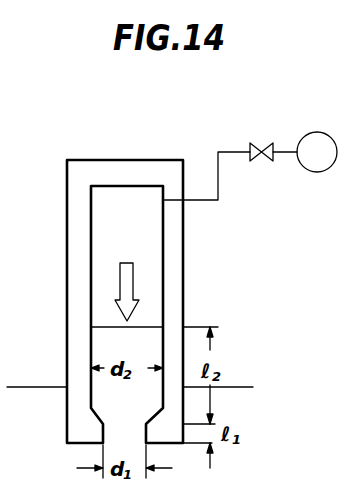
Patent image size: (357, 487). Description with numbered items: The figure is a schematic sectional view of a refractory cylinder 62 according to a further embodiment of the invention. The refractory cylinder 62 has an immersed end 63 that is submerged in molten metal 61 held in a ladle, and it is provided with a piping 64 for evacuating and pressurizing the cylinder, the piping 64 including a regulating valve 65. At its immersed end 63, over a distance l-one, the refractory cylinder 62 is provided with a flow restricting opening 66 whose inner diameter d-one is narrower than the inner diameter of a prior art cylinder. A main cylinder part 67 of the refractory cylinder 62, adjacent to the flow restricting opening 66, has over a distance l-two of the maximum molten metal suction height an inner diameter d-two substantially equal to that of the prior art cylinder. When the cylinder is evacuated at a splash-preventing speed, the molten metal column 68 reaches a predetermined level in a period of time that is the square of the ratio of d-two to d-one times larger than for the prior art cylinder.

The molten metal 61 is at (243, 396).
The refractory cylinder 62 is at (173, 267).
The immersed end 63 is at (80, 425).
The piping 64 is at (230, 150).
The regulating valve 65 is at (269, 149).
The flow restricting opening 66 is at (122, 433).
The main cylinder part 67 is at (160, 303).
The molten metal column 68 is at (100, 340).